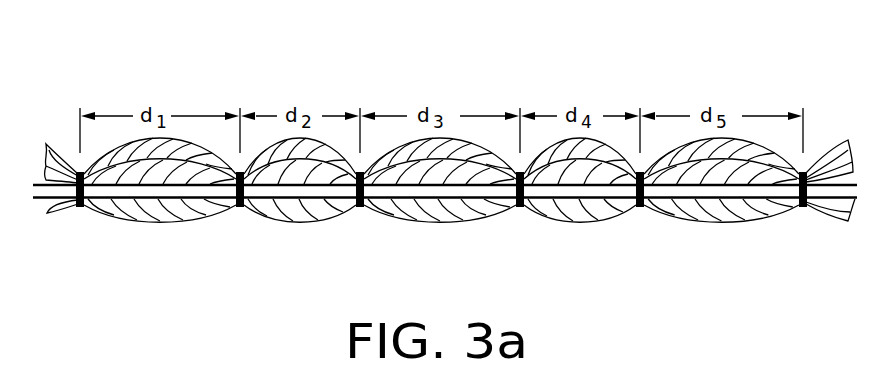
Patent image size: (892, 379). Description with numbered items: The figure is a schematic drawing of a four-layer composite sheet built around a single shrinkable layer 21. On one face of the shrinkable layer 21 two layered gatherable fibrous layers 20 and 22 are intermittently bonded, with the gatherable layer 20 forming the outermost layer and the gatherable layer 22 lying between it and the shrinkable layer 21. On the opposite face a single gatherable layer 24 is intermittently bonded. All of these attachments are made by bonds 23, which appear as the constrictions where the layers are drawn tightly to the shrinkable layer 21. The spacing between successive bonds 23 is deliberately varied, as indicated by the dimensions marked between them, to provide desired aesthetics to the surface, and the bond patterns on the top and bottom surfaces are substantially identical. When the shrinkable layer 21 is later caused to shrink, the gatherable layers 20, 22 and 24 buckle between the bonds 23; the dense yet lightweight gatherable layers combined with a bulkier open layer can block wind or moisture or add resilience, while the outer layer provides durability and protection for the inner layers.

The gatherable layer 20 is at (465, 152).
The shrinkable layer 21 is at (160, 192).
The gatherable layer 22 is at (483, 177).
The bonds 23 is at (641, 210).
The gatherable layer 24 is at (427, 222).